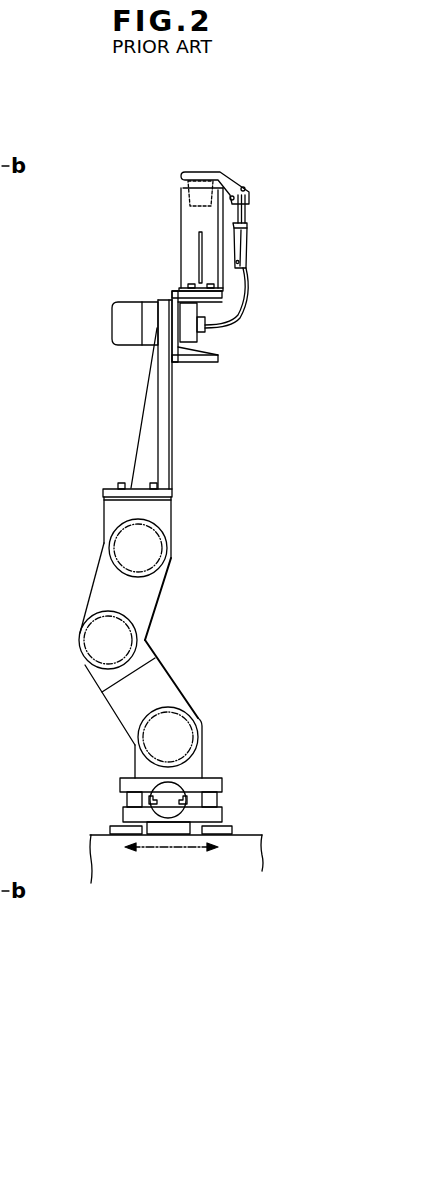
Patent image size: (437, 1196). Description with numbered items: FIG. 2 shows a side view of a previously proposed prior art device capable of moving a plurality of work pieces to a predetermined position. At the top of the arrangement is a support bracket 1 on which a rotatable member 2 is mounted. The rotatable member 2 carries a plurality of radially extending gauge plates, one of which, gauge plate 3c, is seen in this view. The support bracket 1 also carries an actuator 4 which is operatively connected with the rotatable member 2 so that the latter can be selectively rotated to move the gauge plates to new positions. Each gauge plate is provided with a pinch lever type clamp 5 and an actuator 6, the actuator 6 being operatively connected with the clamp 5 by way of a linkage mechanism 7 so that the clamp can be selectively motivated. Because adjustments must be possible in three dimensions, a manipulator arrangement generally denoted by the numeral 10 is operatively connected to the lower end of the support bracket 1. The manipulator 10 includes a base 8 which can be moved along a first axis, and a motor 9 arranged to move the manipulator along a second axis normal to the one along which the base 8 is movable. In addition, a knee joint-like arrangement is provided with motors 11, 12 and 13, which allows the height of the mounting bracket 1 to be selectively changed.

The support bracket 1 is at (143, 412).
The rotatable member 2 is at (214, 362).
The gauge plate 3c is at (181, 235).
The actuator 4 is at (125, 347).
The pinch lever type clamp 5 is at (222, 172).
The actuator 6 is at (249, 231).
The linkage mechanism 7 is at (249, 204).
The base 8 is at (250, 834).
The motor 9 is at (175, 792).
The manipulator arrangement 10 is at (164, 601).
The motor 11 is at (170, 535).
The motor 12 is at (80, 632).
The motor 13 is at (190, 718).